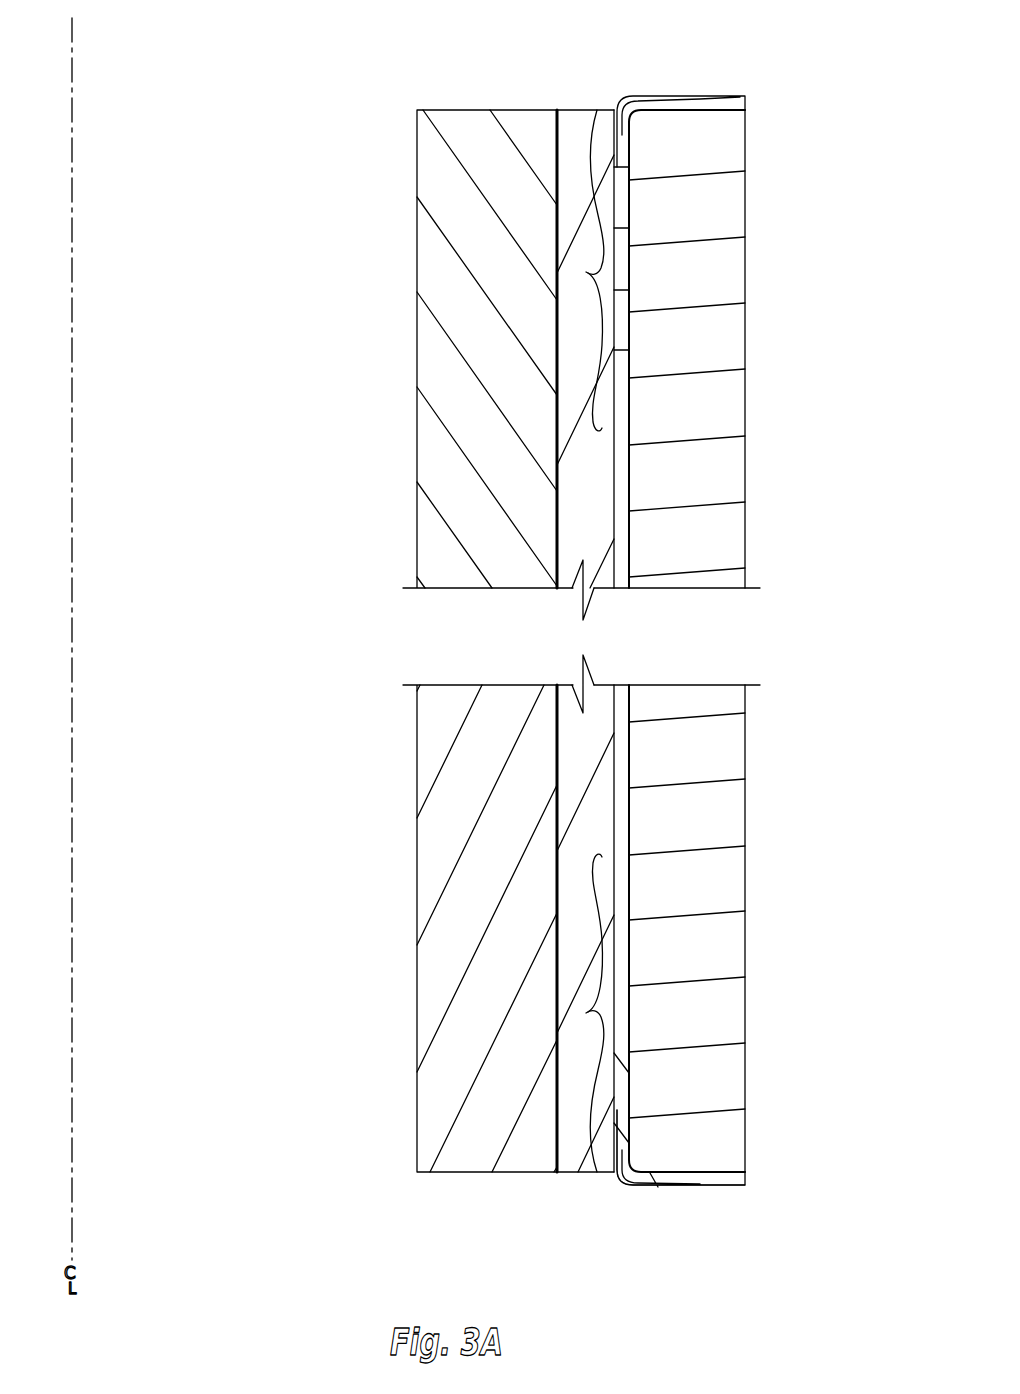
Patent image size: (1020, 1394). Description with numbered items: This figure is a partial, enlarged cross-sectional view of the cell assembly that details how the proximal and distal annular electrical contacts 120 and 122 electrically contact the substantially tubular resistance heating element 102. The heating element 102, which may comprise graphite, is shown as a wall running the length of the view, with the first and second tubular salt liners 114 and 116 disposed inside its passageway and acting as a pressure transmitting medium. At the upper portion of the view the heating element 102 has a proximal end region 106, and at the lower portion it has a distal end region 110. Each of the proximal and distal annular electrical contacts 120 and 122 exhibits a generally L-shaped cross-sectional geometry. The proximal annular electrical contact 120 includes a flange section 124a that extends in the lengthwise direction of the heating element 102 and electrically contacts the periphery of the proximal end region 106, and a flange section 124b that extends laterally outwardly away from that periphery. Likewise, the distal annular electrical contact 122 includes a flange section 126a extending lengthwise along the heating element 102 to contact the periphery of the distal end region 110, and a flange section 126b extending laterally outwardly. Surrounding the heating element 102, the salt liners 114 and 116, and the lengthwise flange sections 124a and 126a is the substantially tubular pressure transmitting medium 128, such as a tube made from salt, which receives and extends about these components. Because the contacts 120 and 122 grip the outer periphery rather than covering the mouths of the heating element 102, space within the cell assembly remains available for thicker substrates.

The substantially tubular resistance heating element 102 is at (577, 522).
The proximal end region 106 is at (588, 273).
The distal end region 110 is at (588, 1012).
The first tubular salt liner 114 is at (445, 158).
The second tubular salt liner 116 is at (463, 893).
The proximal annular electrical contact 120 is at (705, 616).
The distal annular electrical contact 122 is at (638, 1202).
The flange section 124a is at (624, 215).
The flange section 124b is at (687, 100).
The flange section 126a is at (620, 1096).
The flange section 126b is at (688, 1176).
The substantially tubular pressure transmitting medium 128 is at (718, 418).